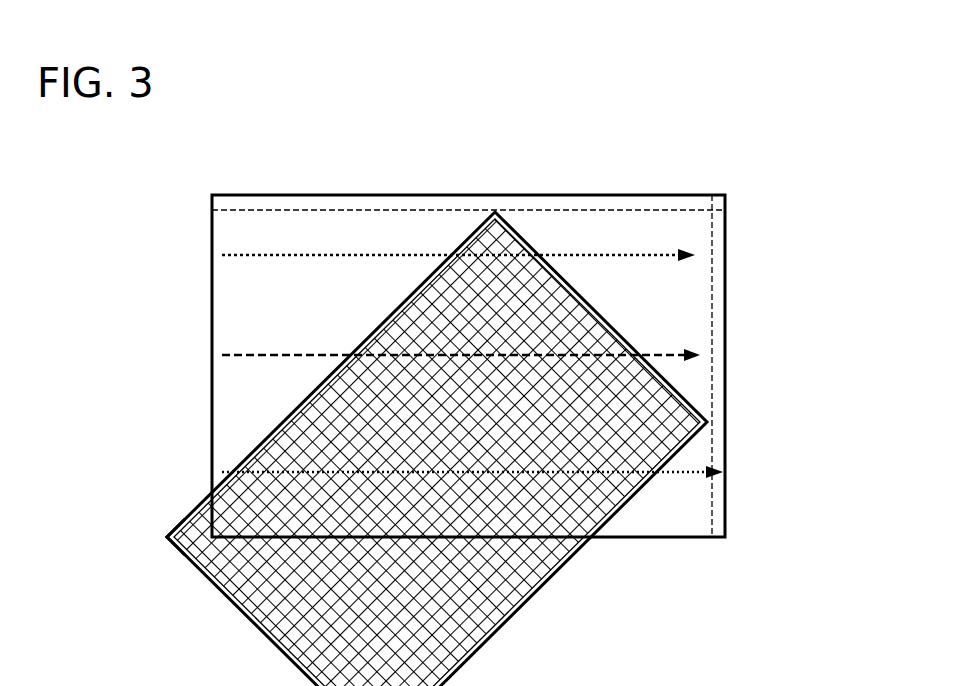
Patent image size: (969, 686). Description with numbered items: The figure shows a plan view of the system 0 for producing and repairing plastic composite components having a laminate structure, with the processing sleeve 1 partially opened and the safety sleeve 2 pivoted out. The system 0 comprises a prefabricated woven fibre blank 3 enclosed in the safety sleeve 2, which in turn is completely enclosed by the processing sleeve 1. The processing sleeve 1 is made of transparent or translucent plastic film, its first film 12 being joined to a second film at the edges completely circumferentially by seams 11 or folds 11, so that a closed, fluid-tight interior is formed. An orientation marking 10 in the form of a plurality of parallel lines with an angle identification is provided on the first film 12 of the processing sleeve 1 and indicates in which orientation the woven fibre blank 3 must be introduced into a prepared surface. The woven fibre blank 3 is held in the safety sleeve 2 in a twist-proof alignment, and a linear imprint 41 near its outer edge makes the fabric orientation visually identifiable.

The system 0 is at (744, 141).
The processing sleeve 1 is at (727, 214).
The safety sleeve 2 is at (255, 450).
The woven fibre blank 3 is at (392, 527).
The orientation marking 10 is at (580, 257).
The seam 11 is at (713, 278).
The first film 12 is at (677, 242).
The linear imprint 41 is at (175, 525).